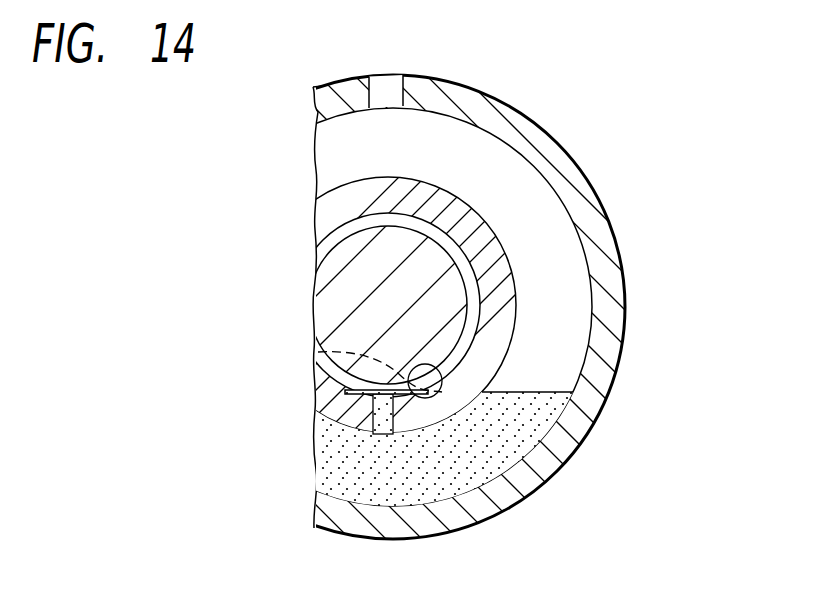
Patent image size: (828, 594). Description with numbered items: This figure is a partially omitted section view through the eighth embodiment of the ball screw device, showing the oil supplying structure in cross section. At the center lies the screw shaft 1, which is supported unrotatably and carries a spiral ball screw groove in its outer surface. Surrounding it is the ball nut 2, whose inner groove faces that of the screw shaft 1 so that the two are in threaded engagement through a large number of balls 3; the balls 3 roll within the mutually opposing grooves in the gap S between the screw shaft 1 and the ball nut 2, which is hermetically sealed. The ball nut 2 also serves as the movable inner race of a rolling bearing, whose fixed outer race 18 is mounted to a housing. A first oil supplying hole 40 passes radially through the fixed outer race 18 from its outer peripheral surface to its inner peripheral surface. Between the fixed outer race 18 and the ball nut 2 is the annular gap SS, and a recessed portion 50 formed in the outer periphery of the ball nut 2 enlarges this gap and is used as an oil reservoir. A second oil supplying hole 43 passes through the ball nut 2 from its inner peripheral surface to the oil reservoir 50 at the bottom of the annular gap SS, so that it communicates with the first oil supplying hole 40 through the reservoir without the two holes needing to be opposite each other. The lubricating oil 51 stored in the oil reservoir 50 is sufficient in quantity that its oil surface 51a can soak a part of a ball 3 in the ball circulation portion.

The screw shaft 1 is at (340, 283).
The ball nut 2 is at (332, 213).
The ball 3 is at (318, 352).
The fixed outer race 18 is at (323, 100).
The first oil supplying hole 40 is at (395, 74).
The second oil supplying hole 43 is at (345, 392).
The recessed portion (oil reservoir) 50 is at (572, 293).
The lubricating oil 51 is at (460, 439).
The oil surface 51a is at (527, 392).
The gap S is at (474, 286).
The annular gap SS is at (535, 216).